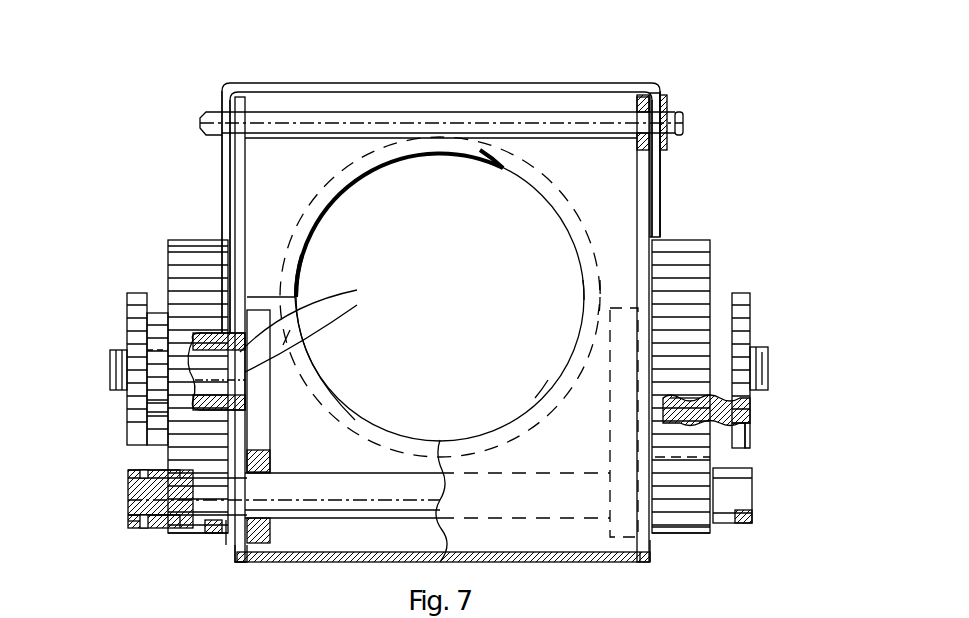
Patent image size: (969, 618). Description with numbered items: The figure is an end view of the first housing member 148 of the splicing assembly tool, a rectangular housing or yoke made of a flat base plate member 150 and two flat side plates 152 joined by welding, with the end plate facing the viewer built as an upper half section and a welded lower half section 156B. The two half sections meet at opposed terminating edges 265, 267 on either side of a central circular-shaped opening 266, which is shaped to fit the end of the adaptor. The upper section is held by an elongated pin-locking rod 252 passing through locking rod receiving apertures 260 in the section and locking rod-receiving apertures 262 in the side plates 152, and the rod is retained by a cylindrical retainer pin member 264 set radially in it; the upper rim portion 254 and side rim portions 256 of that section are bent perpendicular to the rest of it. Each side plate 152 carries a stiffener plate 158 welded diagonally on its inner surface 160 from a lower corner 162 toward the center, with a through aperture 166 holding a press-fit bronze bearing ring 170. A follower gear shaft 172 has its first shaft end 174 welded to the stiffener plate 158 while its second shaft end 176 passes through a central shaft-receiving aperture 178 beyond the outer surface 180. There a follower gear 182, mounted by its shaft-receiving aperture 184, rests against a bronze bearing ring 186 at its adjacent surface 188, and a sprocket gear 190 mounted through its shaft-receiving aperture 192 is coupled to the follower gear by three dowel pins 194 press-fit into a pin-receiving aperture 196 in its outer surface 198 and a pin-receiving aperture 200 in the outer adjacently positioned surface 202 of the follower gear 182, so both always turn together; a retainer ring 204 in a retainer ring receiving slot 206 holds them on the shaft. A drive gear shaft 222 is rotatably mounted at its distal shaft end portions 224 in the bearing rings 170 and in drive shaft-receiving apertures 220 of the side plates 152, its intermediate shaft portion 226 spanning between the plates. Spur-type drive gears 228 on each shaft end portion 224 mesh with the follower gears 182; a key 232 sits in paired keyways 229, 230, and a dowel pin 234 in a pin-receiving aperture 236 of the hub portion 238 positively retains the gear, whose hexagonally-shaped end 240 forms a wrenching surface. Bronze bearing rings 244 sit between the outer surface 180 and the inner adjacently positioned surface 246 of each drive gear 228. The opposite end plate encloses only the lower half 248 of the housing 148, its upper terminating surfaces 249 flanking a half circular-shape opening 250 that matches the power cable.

The first housing member 148 is at (441, 167).
The base plate member 150 is at (335, 562).
The side plates 152 is at (238, 172).
The lower half section 156B is at (257, 83).
The stiffener plates 158 is at (280, 397).
The inner surface 160 is at (370, 165).
The lower corner 162 is at (238, 563).
The through aperture 166 is at (262, 455).
The bronze bearing ring 170 is at (270, 475).
The follower gear shaft 172 is at (223, 363).
The first shaft end 174 is at (280, 368).
The second shaft end 176 is at (128, 355).
The shaft-receiving aperture 178 is at (335, 296).
The outer surface 180 is at (652, 548).
The follower gear 182 is at (178, 240).
The shaft-receiving aperture 184 is at (150, 405).
The bronze bearing ring 186 is at (275, 245).
The adjacent surface 188 is at (608, 284).
The sprocket gear 190 is at (132, 305).
The shaft-receiving aperture 192 is at (165, 345).
The dowel pins 194 is at (755, 430).
The pin-receiving aperture 196 is at (752, 408).
The outer surface 198 is at (740, 435).
The pin-receiving aperture 200 is at (682, 398).
The outer adjacently positioned surface 202 is at (172, 250).
The retainer ring 204 is at (120, 372).
The retainer ring receiving slot 206 is at (766, 350).
The drive shaft-receiving aperture 220 is at (214, 540).
The drive gear shaft 222 is at (400, 466).
The distal shaft end portions 224 is at (130, 500).
The intermediate shaft portion 226 is at (375, 500).
The drive gears 228 is at (185, 532).
The keyways 229 is at (150, 528).
The keyways 230 is at (128, 518).
The key 232 is at (170, 470).
The dowel pin 234 is at (150, 478).
The pin-receiving aperture 236 is at (130, 528).
The hub portion 238 is at (745, 520).
The hexagonally-shaped end 240 is at (752, 515).
The bronze bearing rings 244 is at (225, 535).
The inner adjacently positioned surface 246 is at (280, 413).
The lower half 248 is at (545, 540).
The upper terminating surfaces 249 is at (587, 290).
The half circular-shape opening 250 is at (540, 396).
The pin-locking rod 252 is at (487, 127).
The upper rim portion 254 is at (343, 92).
The side rim portions 256 is at (230, 152).
The locking rod receiving apertures 260 is at (675, 120).
The locking rod-receiving apertures 262 is at (625, 108).
The retainer pin member 264 is at (664, 100).
The terminating edge 265 is at (298, 252).
The circular-shaped opening 266 is at (508, 172).
The terminating edge 267 is at (290, 330).